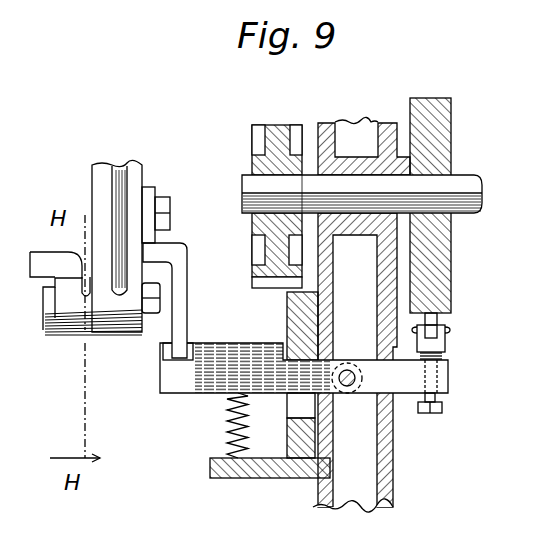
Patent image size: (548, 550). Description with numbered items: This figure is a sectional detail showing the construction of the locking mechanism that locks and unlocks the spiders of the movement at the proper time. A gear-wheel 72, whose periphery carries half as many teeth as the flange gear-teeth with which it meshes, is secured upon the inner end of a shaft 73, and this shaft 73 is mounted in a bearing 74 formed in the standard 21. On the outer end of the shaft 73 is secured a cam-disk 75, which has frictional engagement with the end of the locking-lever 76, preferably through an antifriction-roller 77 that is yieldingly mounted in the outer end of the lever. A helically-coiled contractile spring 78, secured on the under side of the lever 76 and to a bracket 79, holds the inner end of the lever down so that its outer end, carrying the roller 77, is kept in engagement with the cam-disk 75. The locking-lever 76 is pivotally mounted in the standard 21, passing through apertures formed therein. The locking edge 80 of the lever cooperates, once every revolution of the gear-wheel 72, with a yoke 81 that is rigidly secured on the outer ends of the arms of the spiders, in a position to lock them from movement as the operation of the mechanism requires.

The standard 21 is at (355, 362).
The gear-wheel 72 is at (275, 281).
The shaft 73 is at (375, 185).
The bearing 74 is at (362, 215).
The cam-disk 75 is at (440, 273).
The locking-lever 76 is at (210, 394).
The antifriction-roller 77 is at (437, 319).
The helically-coiled contractile spring 78 is at (230, 430).
The bracket 79 is at (270, 454).
The locking edge 80 is at (166, 346).
The yoke 81 is at (188, 322).